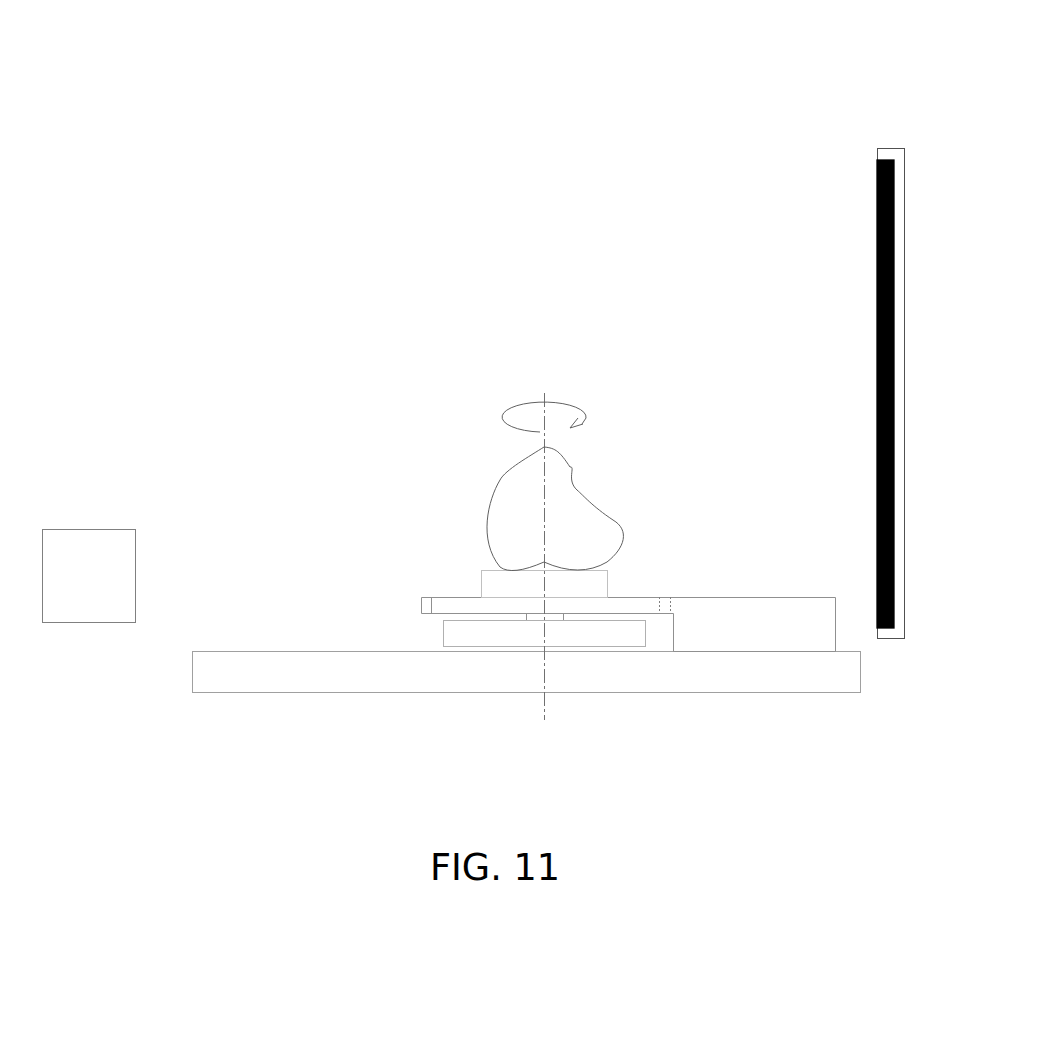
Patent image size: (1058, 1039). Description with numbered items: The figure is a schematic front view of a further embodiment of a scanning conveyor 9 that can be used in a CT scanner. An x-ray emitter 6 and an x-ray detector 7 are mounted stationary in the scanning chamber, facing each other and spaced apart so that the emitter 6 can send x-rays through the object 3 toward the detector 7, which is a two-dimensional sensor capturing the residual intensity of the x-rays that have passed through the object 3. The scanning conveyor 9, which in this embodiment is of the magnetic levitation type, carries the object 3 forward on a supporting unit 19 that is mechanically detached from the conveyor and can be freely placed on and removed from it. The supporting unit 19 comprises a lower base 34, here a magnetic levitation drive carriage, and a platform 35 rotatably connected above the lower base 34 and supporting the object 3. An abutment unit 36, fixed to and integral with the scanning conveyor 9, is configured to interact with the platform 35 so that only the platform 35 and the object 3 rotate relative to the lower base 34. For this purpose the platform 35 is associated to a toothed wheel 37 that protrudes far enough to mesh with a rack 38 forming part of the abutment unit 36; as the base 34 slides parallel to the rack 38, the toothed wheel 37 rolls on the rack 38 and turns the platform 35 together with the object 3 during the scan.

The object 3 is at (535, 507).
The x-ray emitter 6 is at (93, 569).
The x-ray detector 7 is at (878, 260).
The scanning conveyor 9 is at (457, 675).
The supporting unit 19 is at (393, 632).
The lower base 34 is at (472, 637).
The platform 35 is at (493, 582).
The abutment unit 36 is at (707, 560).
The toothed wheel 37 is at (617, 605).
The rack 38 is at (672, 578).